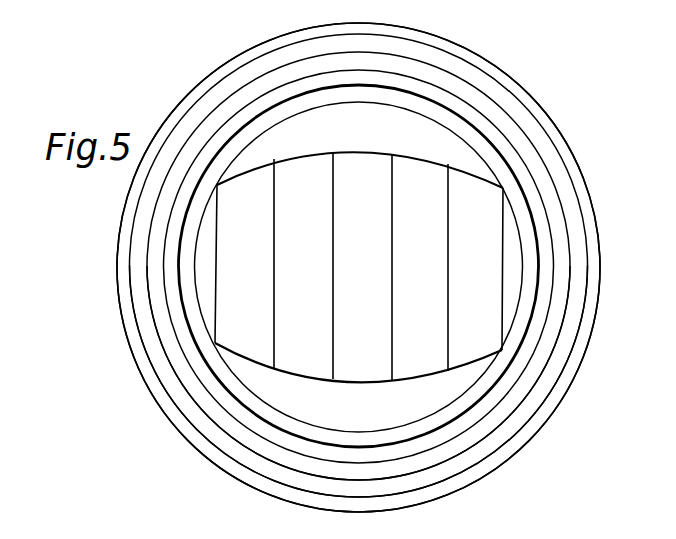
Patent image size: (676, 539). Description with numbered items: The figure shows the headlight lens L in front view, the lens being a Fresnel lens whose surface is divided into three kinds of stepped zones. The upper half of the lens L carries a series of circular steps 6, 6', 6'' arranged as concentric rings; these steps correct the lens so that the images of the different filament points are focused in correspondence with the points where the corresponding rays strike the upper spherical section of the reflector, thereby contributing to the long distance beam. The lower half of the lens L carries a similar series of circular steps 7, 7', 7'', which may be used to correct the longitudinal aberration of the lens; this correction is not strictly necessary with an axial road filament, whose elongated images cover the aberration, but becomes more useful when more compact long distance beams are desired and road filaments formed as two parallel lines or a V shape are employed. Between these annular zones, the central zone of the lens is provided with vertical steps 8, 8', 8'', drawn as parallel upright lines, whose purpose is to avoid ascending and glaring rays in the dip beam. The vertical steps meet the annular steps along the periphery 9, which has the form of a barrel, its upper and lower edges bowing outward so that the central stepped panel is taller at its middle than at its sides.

The lens L is at (559, 402).
The circular step 6 is at (360, 266).
The circular step 6' is at (359, 265).
The circular step 6'' is at (358, 145).
The circular step 7 is at (358, 390).
The circular step 7' is at (359, 382).
The circular step 7'' is at (358, 373).
The vertical step 8 is at (264, 276).
The vertical step 8' is at (318, 280).
The vertical step 8'' is at (373, 282).
The periphery 9 is at (365, 150).